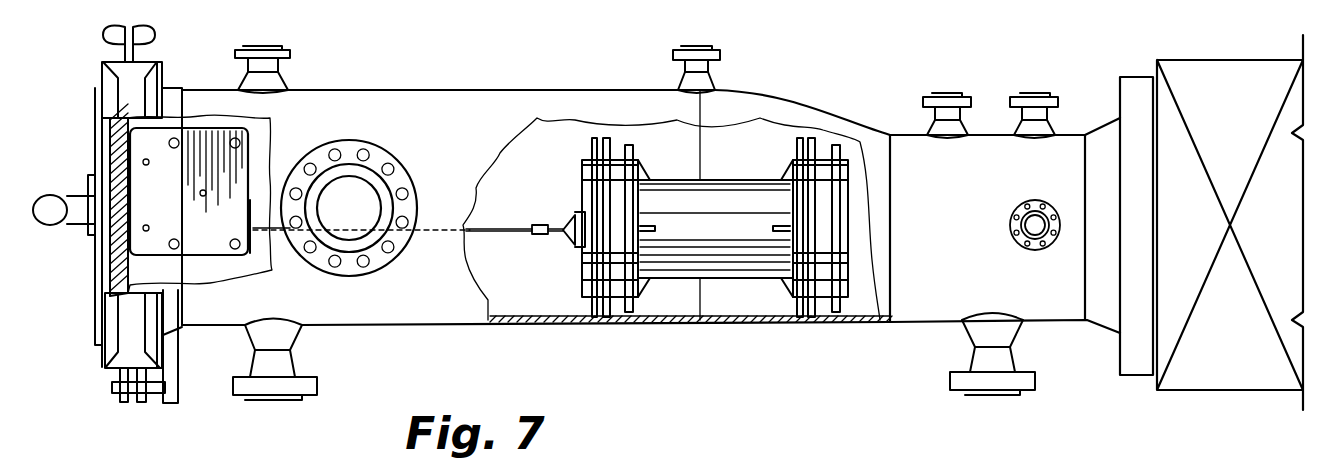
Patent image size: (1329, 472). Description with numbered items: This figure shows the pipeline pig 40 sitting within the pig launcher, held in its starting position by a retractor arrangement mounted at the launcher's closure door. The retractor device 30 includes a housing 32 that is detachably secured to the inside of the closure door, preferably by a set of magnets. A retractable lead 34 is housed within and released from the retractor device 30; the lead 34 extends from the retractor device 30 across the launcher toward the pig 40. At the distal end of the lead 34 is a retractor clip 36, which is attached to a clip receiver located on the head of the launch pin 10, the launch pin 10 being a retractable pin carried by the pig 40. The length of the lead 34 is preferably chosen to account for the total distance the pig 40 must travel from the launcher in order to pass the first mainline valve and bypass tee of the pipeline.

The launch pin 10 is at (562, 210).
The retractor device 30 is at (250, 124).
The housing 32 is at (193, 228).
The lead 34 is at (500, 230).
The clip 36 is at (555, 247).
The pipeline pig 40 is at (725, 283).